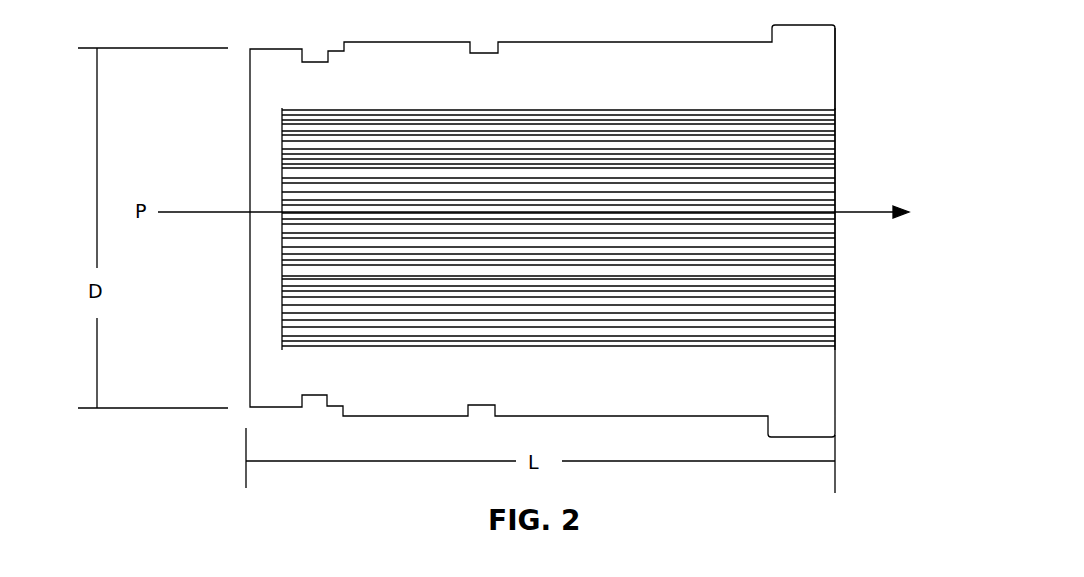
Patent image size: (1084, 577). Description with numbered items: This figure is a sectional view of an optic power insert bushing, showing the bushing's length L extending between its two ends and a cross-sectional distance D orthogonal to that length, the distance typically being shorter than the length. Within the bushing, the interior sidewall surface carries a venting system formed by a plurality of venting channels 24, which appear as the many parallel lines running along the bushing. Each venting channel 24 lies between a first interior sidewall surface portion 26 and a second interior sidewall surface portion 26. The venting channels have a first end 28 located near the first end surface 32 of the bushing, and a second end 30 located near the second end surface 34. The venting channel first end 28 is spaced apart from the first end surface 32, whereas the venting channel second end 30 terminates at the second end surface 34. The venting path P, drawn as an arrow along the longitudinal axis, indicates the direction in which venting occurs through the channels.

The venting channel 24 is at (477, 228).
The interior sidewall surface portion 26 is at (288, 163).
The venting channel first end 28 is at (283, 278).
The venting channel second end 30 is at (830, 288).
The first end surface 32 is at (248, 370).
The second end surface 34 is at (837, 90).